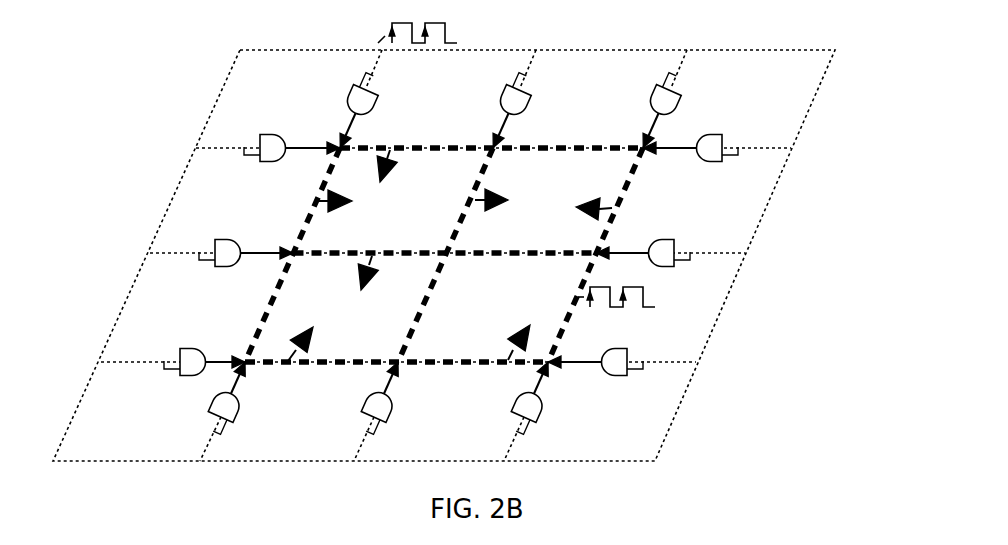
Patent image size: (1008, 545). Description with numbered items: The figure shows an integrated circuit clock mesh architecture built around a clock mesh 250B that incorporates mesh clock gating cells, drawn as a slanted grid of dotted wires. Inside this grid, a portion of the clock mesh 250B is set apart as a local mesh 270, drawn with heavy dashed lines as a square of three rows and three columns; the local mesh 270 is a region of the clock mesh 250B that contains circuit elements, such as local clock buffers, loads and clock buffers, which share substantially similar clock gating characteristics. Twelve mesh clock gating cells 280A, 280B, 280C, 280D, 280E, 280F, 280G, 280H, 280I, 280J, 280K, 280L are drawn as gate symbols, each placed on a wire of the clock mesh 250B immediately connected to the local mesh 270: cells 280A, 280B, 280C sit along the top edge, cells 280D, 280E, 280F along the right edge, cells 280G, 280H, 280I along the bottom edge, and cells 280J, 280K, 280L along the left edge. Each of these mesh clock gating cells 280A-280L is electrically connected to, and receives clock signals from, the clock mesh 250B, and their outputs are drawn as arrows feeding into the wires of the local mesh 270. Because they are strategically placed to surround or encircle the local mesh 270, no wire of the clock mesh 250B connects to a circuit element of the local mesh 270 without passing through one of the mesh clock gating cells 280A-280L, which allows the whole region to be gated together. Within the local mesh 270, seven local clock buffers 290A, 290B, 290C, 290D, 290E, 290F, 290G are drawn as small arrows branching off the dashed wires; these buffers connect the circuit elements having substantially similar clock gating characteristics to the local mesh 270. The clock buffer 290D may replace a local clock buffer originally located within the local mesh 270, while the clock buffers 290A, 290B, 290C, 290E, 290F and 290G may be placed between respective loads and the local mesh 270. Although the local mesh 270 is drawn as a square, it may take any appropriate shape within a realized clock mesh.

The clock mesh 250B is at (833, 50).
The local mesh 270 is at (563, 148).
The mesh clock gating cell 280A is at (367, 115).
The mesh clock gating cell 280B is at (520, 115).
The mesh clock gating cell 280C is at (670, 115).
The mesh clock gating cell 280D is at (710, 134).
The mesh clock gating cell 280E is at (664, 239).
The mesh clock gating cell 280F is at (614, 348).
The mesh clock gating cell 280G is at (543, 418).
The mesh clock gating cell 280H is at (393, 418).
The mesh clock gating cell 280I is at (238, 418).
The mesh clock gating cell 280J is at (183, 377).
The mesh clock gating cell 280K is at (229, 268).
The mesh clock gating cell 280L is at (276, 163).
The local clock buffer 290A is at (390, 178).
The local clock buffer 290B is at (503, 194).
The local clock buffer 290C is at (592, 213).
The local clock buffer 290D is at (530, 333).
The local clock buffer 290E is at (318, 335).
The local clock buffer 290F is at (362, 273).
The local clock buffer 290G is at (352, 203).